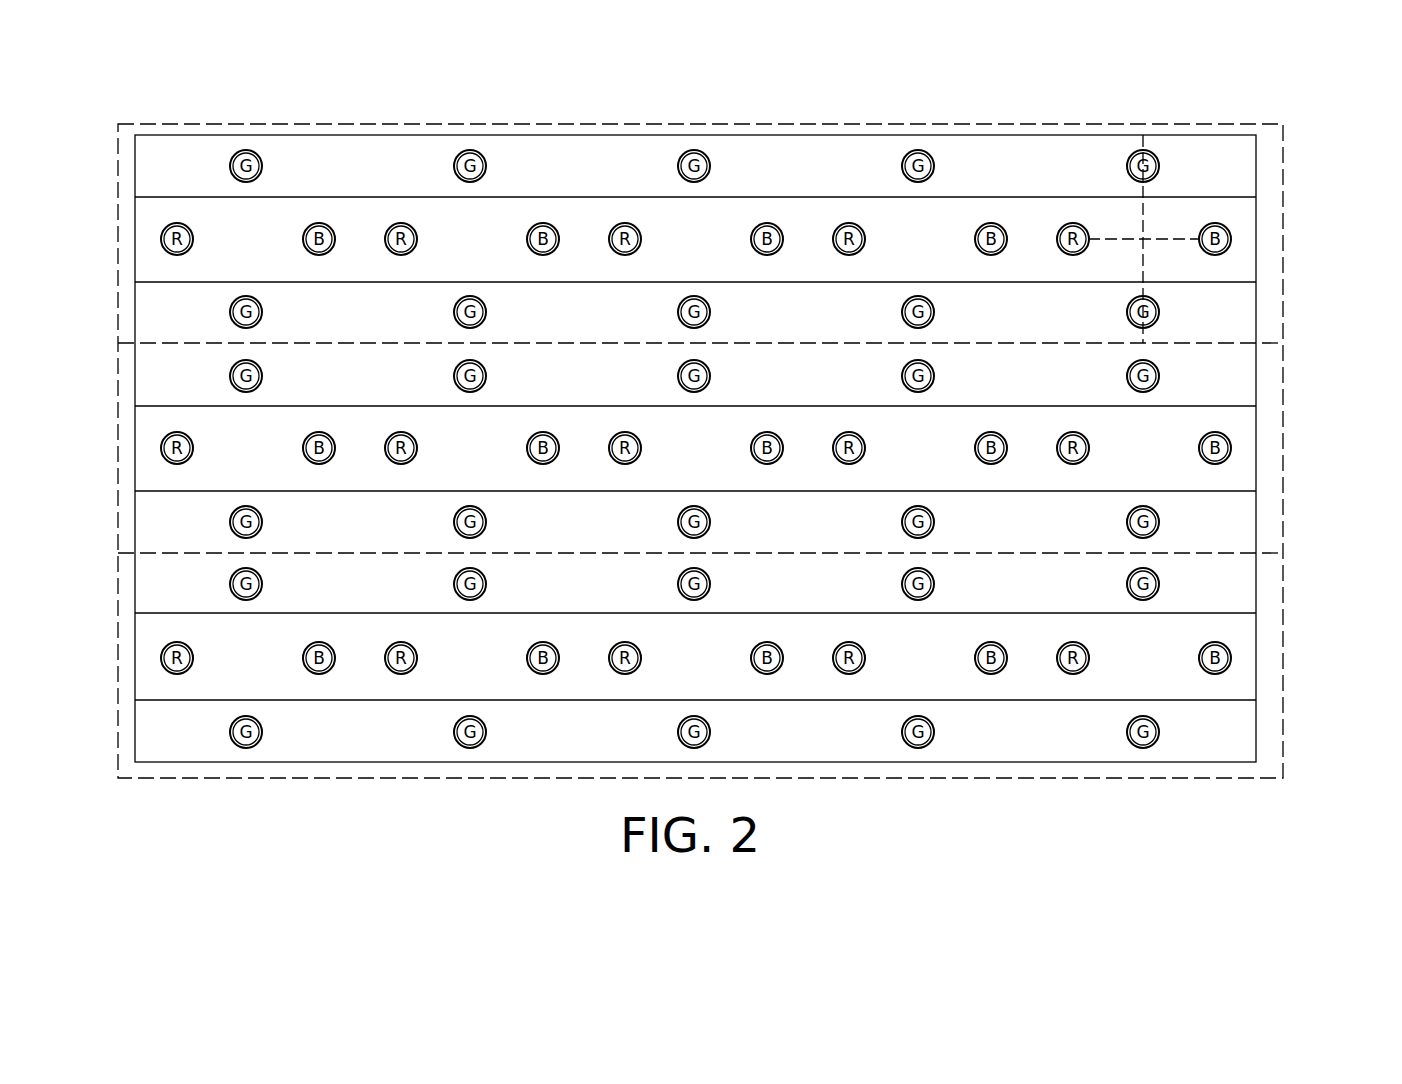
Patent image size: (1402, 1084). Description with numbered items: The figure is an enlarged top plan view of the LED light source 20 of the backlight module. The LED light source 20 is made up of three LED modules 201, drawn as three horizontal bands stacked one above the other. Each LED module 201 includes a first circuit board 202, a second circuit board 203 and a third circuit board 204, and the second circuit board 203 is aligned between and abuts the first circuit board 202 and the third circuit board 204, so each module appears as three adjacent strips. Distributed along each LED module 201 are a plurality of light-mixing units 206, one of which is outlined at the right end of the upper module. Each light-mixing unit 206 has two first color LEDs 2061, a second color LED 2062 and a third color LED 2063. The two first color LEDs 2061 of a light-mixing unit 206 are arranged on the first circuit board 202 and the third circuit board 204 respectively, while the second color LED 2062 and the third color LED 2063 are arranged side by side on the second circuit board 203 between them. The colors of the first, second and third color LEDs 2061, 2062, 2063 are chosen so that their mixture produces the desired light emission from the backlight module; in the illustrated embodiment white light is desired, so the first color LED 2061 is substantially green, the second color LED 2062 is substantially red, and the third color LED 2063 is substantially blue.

The LED light source 20 is at (748, 45).
The LED module 201 is at (1283, 448).
The first circuit board 202 is at (167, 172).
The second circuit board 203 is at (152, 252).
The third circuit board 204 is at (150, 325).
The light-mixing unit 206 is at (1038, 67).
The first color LED 2061 is at (1137, 297).
The second color LED 2062 is at (1070, 225).
The third color LED 2063 is at (1208, 225).